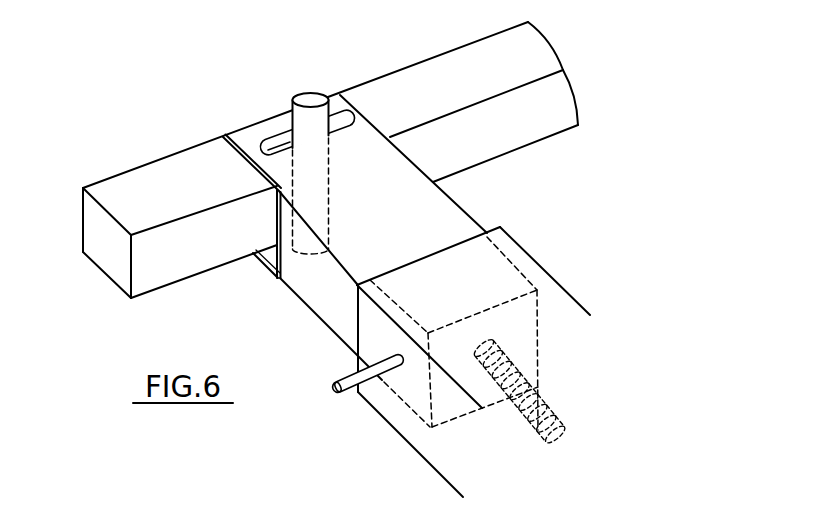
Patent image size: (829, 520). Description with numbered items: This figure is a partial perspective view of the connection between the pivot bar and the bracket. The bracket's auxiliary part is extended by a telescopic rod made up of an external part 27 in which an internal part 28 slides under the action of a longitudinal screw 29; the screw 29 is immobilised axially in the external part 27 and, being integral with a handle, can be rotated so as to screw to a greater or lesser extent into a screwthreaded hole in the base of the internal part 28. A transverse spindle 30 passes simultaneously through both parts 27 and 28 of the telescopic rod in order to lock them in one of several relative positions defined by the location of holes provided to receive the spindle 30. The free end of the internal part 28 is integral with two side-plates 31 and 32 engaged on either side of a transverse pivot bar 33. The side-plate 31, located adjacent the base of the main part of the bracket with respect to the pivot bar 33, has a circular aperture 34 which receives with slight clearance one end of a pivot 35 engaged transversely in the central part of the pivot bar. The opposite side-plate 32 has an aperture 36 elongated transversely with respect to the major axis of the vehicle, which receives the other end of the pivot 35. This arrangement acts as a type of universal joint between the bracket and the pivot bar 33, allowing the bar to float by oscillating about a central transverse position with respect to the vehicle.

The external part 27 is at (560, 302).
The internal part 28 is at (457, 213).
The longitudinal screw 29 is at (547, 405).
The transverse spindle 30 is at (350, 380).
The side-plate 31 is at (260, 262).
The side-plate 32 is at (270, 130).
The transverse pivot bar 33 is at (410, 62).
The circular aperture 34 is at (340, 248).
The pivot 35 is at (308, 96).
The elongated aperture 36 is at (330, 123).